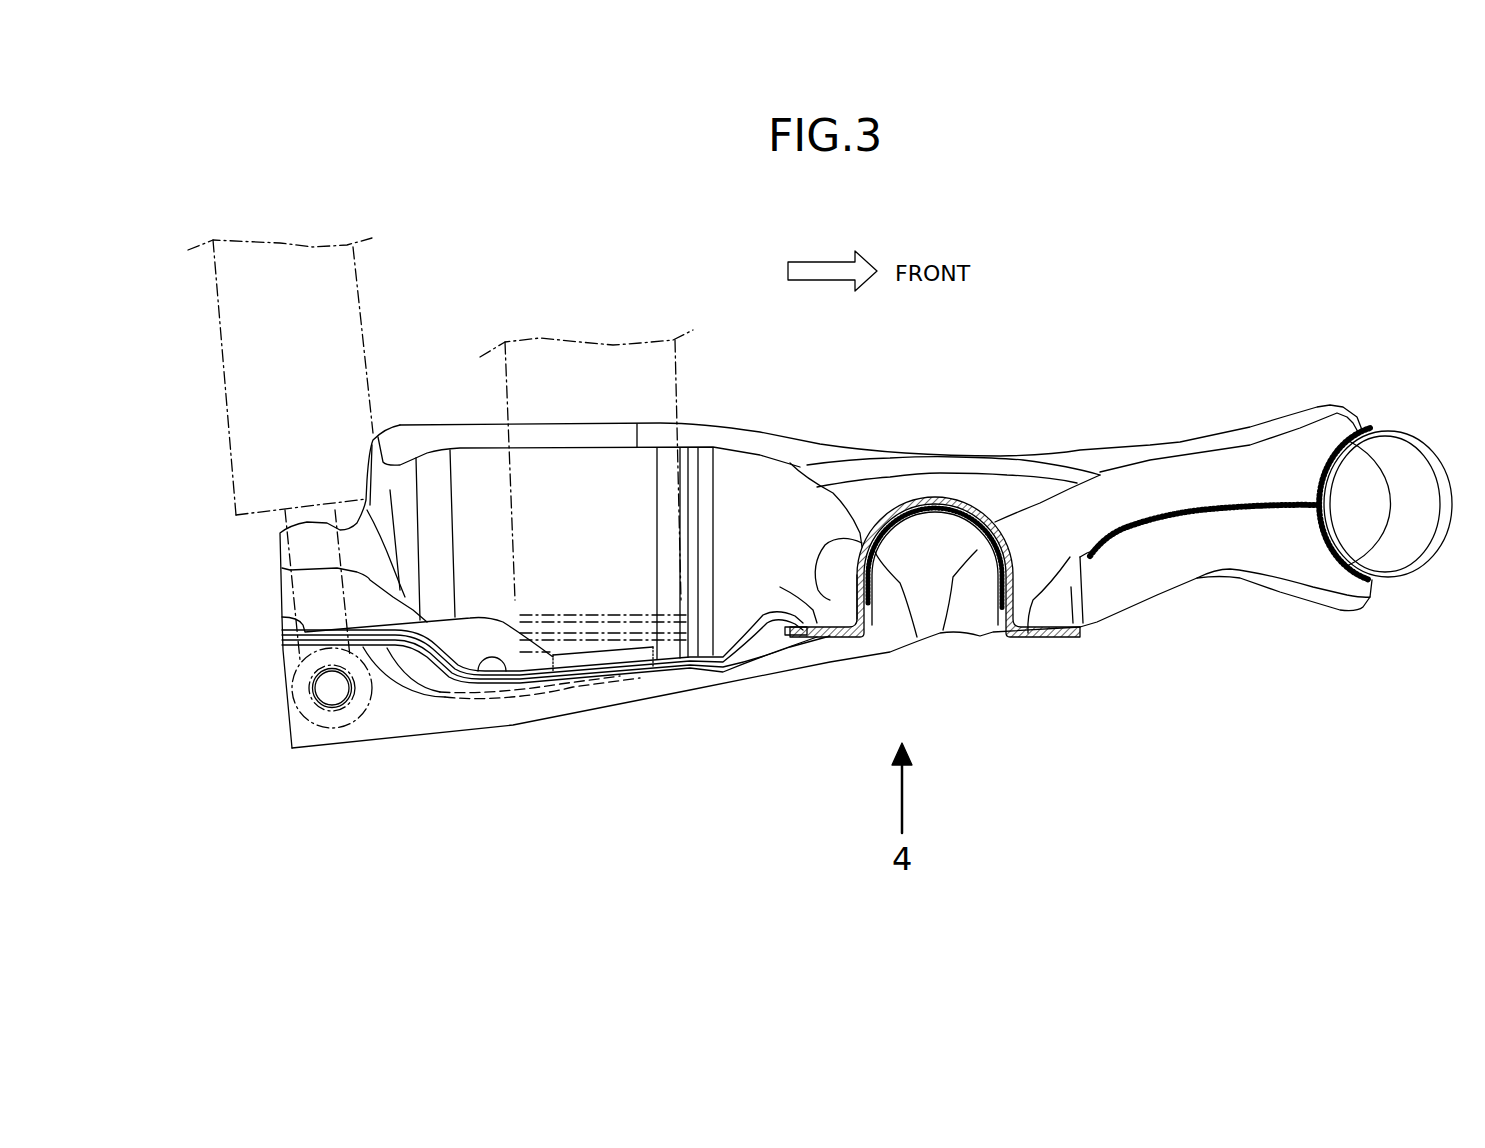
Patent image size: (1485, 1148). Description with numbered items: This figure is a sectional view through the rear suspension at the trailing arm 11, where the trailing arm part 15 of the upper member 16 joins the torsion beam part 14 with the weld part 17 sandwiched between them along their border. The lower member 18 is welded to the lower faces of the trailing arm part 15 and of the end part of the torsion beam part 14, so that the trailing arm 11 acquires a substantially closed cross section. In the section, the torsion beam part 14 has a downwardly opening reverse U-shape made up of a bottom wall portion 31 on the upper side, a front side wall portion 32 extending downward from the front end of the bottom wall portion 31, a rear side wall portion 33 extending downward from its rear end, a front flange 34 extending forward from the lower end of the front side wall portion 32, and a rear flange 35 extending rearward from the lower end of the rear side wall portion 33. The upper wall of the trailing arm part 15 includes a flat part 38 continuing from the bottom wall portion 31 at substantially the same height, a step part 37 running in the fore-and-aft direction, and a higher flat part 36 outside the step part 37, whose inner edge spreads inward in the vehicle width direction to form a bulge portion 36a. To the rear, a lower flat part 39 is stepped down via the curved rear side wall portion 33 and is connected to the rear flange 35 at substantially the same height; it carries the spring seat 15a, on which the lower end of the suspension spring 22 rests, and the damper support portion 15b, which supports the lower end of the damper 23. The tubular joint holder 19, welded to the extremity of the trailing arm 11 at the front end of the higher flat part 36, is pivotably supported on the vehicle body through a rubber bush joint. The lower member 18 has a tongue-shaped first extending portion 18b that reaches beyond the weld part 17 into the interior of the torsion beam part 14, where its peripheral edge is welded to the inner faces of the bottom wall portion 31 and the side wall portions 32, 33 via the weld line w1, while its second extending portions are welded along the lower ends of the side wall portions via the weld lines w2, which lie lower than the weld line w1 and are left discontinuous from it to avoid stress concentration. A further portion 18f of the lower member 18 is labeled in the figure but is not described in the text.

The trailing arm 11 is at (912, 386).
The torsion beam part 14 is at (1017, 556).
The trailing arm part 15 is at (450, 419).
The spring seat 15a is at (678, 658).
The damper support portion 15b is at (282, 617).
The upper member 16 is at (1181, 441).
The weld part 17 is at (965, 495).
The lower member 18 is at (1164, 600).
The first extending portion 18b is at (918, 513).
The through hole 18f is at (957, 600).
The joint holder 19 is at (1397, 432).
The suspension spring 22 is at (677, 383).
The damper 23 is at (217, 335).
The bottom wall portion 31 is at (931, 503).
The front side wall portion 32 is at (1010, 580).
The rear side wall portion 33 is at (580, 465).
The front flange 34 is at (1045, 640).
The rear flange 35 is at (835, 640).
The higher flat part 36 is at (821, 433).
The bulge portion 36a is at (638, 422).
The step part 37 is at (877, 468).
The flat part 38 is at (1017, 483).
The lower flat part 39 is at (505, 673).
The weld line w1 is at (907, 633).
The weld lines w2 is at (807, 620).